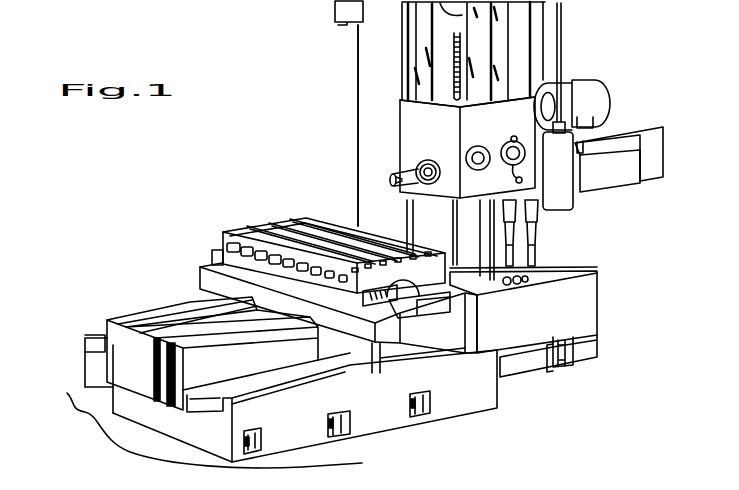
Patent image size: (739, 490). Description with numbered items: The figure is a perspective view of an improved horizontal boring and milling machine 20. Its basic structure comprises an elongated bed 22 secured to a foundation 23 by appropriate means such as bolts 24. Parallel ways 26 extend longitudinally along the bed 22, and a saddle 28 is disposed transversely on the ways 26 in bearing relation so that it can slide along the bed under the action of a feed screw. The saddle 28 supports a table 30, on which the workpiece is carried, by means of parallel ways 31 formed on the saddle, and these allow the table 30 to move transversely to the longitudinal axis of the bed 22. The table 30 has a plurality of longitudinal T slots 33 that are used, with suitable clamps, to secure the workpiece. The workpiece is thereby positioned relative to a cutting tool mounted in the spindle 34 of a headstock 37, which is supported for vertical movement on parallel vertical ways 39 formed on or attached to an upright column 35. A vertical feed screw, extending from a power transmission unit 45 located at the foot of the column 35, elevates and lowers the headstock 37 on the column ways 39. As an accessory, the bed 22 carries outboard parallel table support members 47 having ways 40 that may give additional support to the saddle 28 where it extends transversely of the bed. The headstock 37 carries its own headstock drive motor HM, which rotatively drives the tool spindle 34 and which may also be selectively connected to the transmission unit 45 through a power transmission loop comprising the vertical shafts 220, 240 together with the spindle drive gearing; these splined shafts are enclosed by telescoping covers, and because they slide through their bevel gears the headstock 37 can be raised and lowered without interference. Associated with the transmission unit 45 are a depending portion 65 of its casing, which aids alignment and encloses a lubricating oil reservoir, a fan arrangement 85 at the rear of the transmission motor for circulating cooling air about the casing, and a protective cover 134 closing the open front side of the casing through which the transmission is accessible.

The horizontal boring and milling machine 20 is at (299, 130).
The bed 22 is at (110, 366).
The foundation 23 is at (95, 418).
The bolts 24 is at (262, 437).
The ways 26 is at (161, 312).
The saddle 28 is at (200, 275).
The table 30 is at (222, 240).
The ways 31 is at (404, 304).
The T slots 33 is at (390, 272).
The spindle 34 is at (394, 174).
The column 35 is at (358, 76).
The headstock 37 is at (406, 117).
The vertical ways 39 is at (430, 43).
The ways 40 is at (100, 338).
The power transmission unit 45 is at (588, 338).
The outboard parallel table support members 47 is at (85, 390).
The depending portion 65 is at (587, 358).
The fan arrangement 85 is at (610, 329).
The protective cover 134 is at (592, 280).
The vertical power shaft 220 is at (518, 243).
The vertical shaft 240 is at (532, 257).
The headstock drive motor HM is at (571, 89).